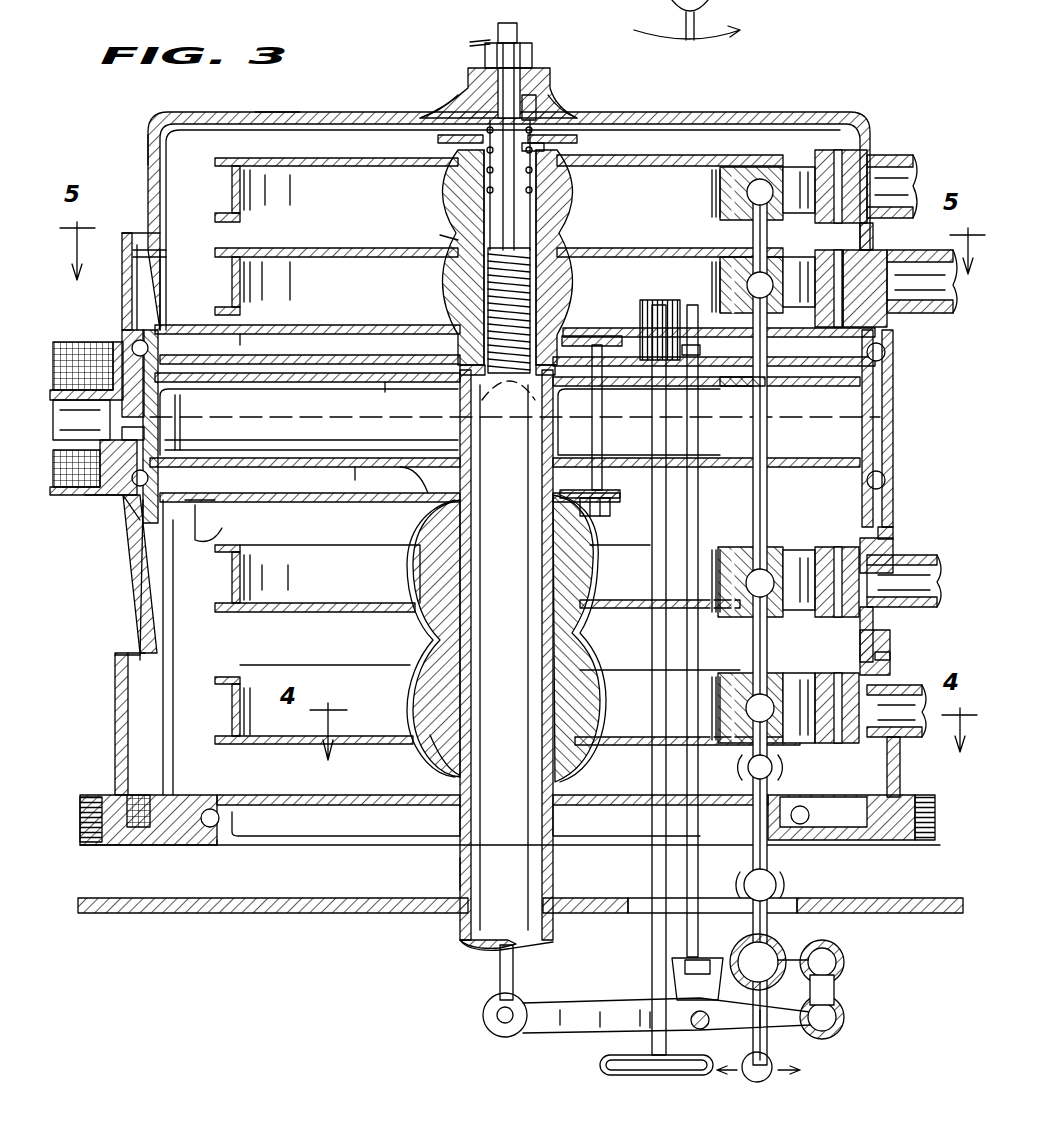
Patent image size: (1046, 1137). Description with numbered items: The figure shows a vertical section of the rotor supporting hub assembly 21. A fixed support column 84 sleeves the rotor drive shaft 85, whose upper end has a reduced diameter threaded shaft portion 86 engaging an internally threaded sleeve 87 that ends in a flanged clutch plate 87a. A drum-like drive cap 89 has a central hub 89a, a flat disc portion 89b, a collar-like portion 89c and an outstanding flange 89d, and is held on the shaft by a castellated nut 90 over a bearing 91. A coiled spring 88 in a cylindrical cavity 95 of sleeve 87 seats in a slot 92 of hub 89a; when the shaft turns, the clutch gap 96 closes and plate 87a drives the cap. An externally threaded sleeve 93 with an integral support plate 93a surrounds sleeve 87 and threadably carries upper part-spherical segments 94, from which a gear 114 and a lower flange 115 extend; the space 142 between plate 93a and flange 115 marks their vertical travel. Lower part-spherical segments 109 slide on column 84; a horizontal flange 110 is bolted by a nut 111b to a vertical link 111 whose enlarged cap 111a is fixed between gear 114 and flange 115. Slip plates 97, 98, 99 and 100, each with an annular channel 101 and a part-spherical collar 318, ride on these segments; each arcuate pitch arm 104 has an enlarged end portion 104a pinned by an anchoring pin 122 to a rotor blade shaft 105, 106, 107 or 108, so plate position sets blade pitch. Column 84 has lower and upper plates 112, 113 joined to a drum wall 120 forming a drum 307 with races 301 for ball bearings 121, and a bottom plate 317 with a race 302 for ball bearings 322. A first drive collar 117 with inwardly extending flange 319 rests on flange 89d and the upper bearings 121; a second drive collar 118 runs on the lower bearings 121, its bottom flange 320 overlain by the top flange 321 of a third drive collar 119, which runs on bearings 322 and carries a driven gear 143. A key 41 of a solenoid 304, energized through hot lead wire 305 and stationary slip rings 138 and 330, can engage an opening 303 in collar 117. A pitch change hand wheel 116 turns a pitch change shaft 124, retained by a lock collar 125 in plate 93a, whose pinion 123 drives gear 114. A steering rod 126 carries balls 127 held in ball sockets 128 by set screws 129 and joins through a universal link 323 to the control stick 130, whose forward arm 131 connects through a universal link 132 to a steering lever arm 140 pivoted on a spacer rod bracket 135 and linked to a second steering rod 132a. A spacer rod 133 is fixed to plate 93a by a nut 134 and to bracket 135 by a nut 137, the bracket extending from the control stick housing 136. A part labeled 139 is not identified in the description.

The rotor supporting hub assembly 21 is at (125, 588).
The key 41 is at (88, 425).
The support column 84 is at (460, 872).
The rotor drive shaft 85 is at (492, 650).
The threaded shaft portion 86 is at (488, 280).
The internally threaded sleeve 87 is at (555, 215).
The annular flanged clutch plate 87a is at (440, 115).
The helically coiled spring 88 is at (460, 180).
The drive cap 89 is at (813, 112).
The central hub 89a is at (530, 82).
The flat disc portion 89b is at (272, 112).
The cylindrical collar-like portion 89c is at (150, 142).
The outstanding flange 89d is at (155, 254).
The castellated nut 90 is at (522, 50).
The bearing 91 is at (470, 86).
The slot 92 is at (535, 105).
The externally threaded sleeve 93 is at (440, 237).
The support plate 93a is at (385, 388).
The upper part-spherical segment 94 is at (462, 197).
The cylindrical cavity 95 is at (550, 148).
The clutch gap 96 is at (558, 130).
The slip plate 97 is at (310, 158).
The slip plate 98 is at (312, 260).
The slip plate 99 is at (345, 600).
The slip plate 100 is at (445, 752).
The annular channel 101 is at (230, 190).
The pitch arm 104 is at (800, 160).
The first enlarged end portion 104a is at (860, 150).
The rotor blade shaft 105 is at (900, 185).
The rotor blade shaft 106 is at (933, 298).
The rotor blade shaft 107 is at (905, 585).
The rotor blade shaft 108 is at (905, 735).
The part-spherical lower segment 109 is at (435, 570).
The horizontal flange 110 is at (455, 504).
The vertical rod-like link 111 is at (590, 448).
The enlarged circular cap 111a is at (622, 335).
The nut 111b is at (610, 510).
The lower plate 112 is at (265, 458).
The upper plate 113 is at (304, 390).
The gear 114 is at (372, 325).
The lower flange 115 is at (583, 335).
The pitch change hand wheel 116 is at (600, 1065).
The first annular rotor blade drive collar 117 is at (230, 285).
The second annular rotor blade drive collar 118 is at (162, 632).
The third annular rotor blade drive collar 119 is at (118, 725).
The outer cylindrical drum wall 120 is at (168, 397).
The ball bearings 121 is at (133, 346).
The anchoring pin 122 is at (848, 245).
The pinion 123 is at (680, 330).
The pitch change shaft 124 is at (652, 772).
The lock collar 125 is at (660, 400).
The steering rod 126 is at (753, 527).
The part-spheres 127 is at (748, 205).
The ball sockets 128 is at (750, 742).
The set screws 129 is at (712, 182).
The control stick 130 is at (778, 1065).
The forward arm 131 is at (812, 950).
The universal link 132 is at (845, 965).
The second steering rod 132a is at (493, 972).
The spacer rod 133 is at (690, 760).
The nut 134 is at (742, 380).
The spacer rod bracket 135 is at (682, 998).
The universal control stick housing 136 is at (730, 962).
The nut 137 is at (680, 972).
The slip ring 138 is at (240, 334).
The packing 139 is at (168, 805).
The steering lever arm 140 is at (532, 1025).
The space 142 is at (398, 350).
The driven gear 143 is at (925, 838).
The races 301 is at (876, 470).
The bearing race 302 is at (222, 818).
The opening 303 is at (445, 392).
The solenoid 304 is at (75, 340).
The hot lead wire 305 is at (425, 467).
The cylindrical drum 307 is at (160, 432).
The bottom plate 317 is at (320, 798).
The part-spherical collar 318 is at (430, 185).
The inwardly extending flange 319 is at (128, 236).
The bottom outwardly extending flange 320 is at (892, 656).
The top inwardly extending flange 321 is at (120, 658).
The ball bearings 322 is at (145, 550).
The universal link 323 is at (770, 872).
The slip ring 330 is at (358, 478).